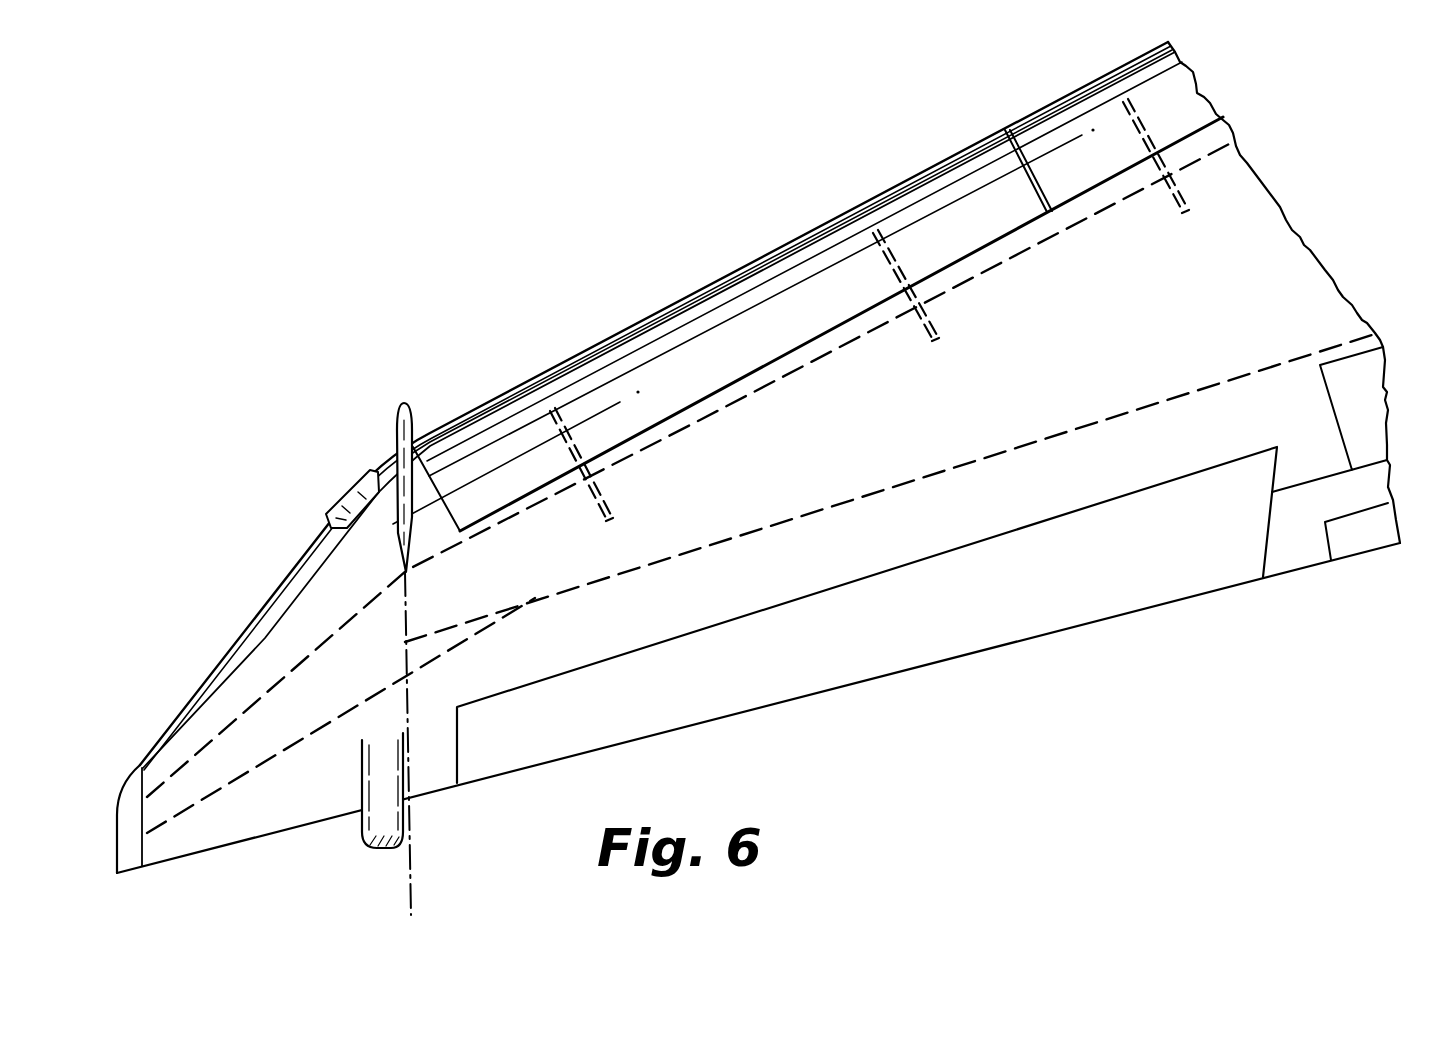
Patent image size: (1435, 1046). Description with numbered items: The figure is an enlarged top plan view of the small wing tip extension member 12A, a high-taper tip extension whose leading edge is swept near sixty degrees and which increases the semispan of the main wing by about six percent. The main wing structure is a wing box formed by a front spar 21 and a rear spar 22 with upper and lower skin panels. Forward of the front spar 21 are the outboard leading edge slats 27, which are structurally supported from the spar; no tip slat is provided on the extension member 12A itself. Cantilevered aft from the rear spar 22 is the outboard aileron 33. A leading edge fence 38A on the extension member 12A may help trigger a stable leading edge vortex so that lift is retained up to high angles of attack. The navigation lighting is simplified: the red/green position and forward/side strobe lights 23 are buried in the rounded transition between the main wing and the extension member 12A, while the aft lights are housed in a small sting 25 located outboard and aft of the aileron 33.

The outboard leading edge slats 27 is at (811, 238).
The leading edge fence 38A is at (434, 456).
The red/green position and forward/side strobe lights 23 is at (345, 495).
The front spar 21 is at (836, 346).
The rear spar 22 is at (813, 515).
The wing tip extension member 12A is at (263, 638).
The outboard aileron control surfaces 33 is at (913, 658).
The sting 25 is at (362, 833).